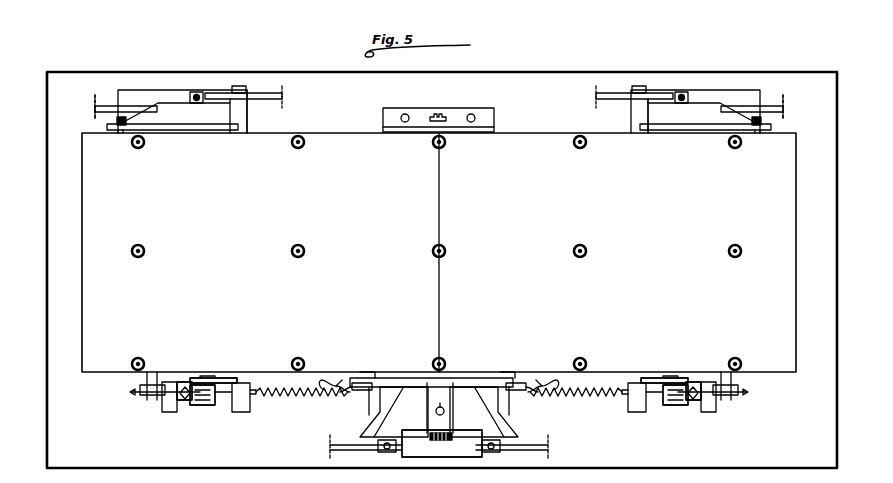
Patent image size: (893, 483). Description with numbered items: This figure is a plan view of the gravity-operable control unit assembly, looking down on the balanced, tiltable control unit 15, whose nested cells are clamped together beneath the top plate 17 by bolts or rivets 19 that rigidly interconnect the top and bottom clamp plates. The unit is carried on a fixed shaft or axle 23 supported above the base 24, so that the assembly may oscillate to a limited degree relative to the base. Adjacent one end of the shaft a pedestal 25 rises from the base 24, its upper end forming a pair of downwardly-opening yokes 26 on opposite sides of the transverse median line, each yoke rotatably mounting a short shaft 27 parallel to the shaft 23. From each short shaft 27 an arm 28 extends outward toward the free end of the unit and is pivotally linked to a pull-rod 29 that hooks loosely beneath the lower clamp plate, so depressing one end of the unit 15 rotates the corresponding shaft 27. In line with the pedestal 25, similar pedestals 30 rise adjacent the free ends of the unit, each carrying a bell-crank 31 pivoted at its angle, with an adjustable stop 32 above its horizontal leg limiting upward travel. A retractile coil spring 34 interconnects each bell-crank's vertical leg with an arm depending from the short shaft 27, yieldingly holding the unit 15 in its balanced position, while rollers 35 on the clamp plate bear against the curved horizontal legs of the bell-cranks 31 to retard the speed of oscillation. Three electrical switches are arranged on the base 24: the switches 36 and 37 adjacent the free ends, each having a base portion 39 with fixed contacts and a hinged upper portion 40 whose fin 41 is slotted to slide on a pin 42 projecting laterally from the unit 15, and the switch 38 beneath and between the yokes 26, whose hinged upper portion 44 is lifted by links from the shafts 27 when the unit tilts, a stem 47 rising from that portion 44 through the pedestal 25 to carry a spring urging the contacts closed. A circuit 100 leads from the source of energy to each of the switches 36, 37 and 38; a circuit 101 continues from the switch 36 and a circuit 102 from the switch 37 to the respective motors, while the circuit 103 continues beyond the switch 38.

The balanced tiltable control unit 15 is at (439, 252).
The clamp plate 17 is at (322, 252).
The bolts or rivets 19 is at (138, 258).
The fixed shaft or axle 23 is at (442, 113).
The base 24 is at (442, 270).
The pedestal 25 is at (455, 386).
The yokes 26 is at (439, 412).
The short shaft 27 is at (372, 405).
The arm 28 is at (358, 391).
The pull-rod 29 is at (322, 378).
The pedestal 30 is at (218, 378).
The bell-crank 31 is at (204, 405).
The adjustable stop 32 is at (184, 400).
The retractile coil spring 34 is at (283, 396).
The rollers 35 is at (140, 392).
The switch 36 is at (236, 115).
The switch 37 is at (634, 112).
The switch 38 is at (395, 448).
The base portion 39 is at (439, 110).
The upper portion 40 is at (439, 120).
The fin 41 is at (160, 121).
The pin 42 is at (107, 121).
The upper portion 44 is at (442, 443).
The stem 47 is at (440, 401).
The circuit 100 is at (256, 98).
The circuit 101 is at (94, 107).
The circuit 102 is at (784, 107).
The circuit 103 is at (329, 443).